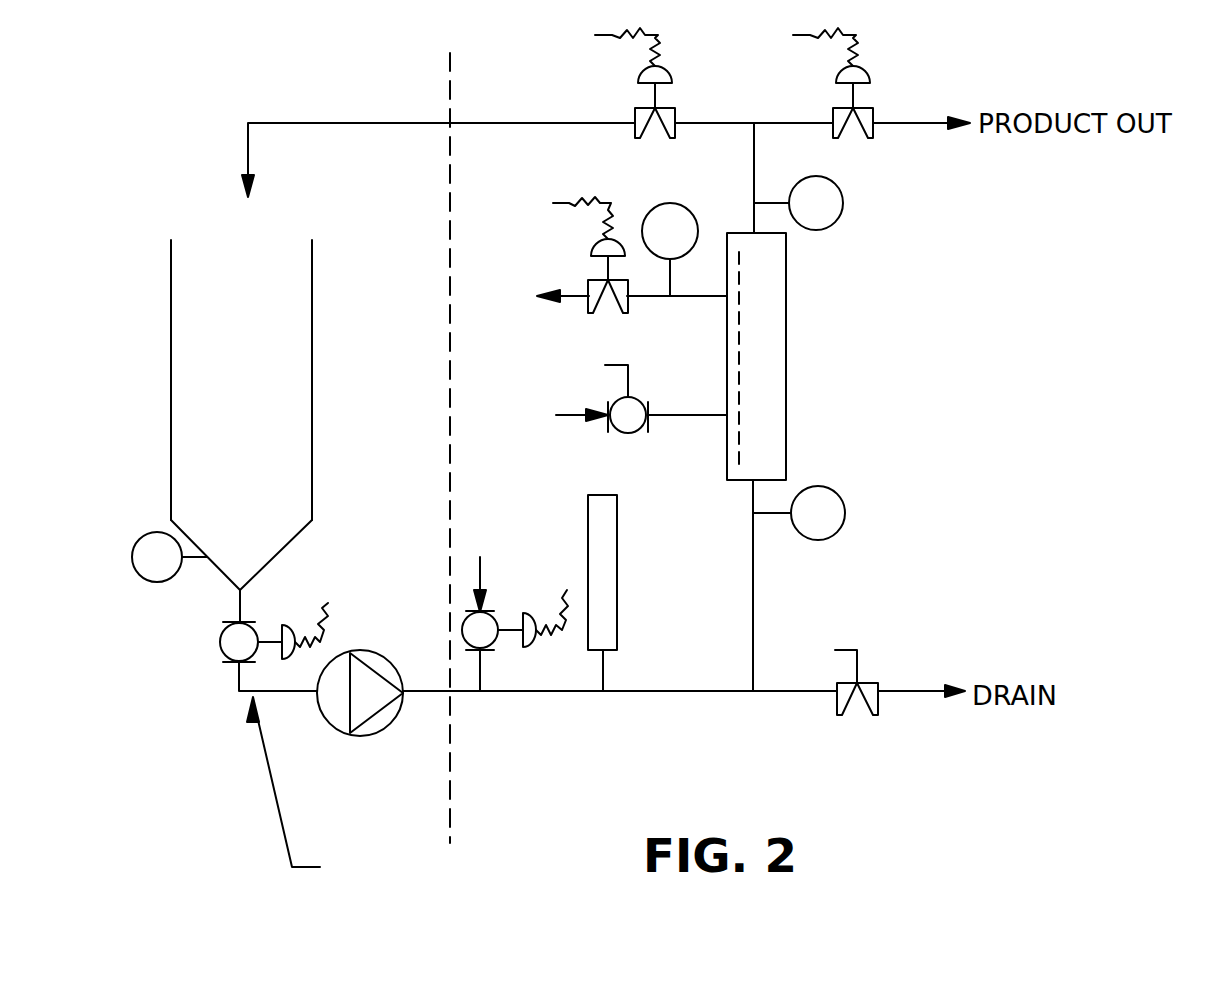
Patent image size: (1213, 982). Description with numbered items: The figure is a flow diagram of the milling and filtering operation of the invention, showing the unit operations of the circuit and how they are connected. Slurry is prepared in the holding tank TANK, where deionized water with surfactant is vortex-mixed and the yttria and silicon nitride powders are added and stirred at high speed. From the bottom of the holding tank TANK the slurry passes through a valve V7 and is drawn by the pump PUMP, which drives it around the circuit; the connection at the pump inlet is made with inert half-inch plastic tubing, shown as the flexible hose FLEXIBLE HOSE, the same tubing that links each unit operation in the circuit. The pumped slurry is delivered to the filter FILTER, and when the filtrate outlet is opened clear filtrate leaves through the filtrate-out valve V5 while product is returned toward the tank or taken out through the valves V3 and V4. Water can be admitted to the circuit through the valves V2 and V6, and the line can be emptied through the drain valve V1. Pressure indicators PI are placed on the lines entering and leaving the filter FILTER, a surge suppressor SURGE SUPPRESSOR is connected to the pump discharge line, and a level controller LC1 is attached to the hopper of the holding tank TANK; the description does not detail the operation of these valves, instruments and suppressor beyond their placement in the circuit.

The drain valve V1 is at (856, 699).
The water inlet valve (pump suction) V2 is at (515, 594).
The product out valve V3 is at (635, 99).
The product out valve V4 is at (833, 99).
The filtrate out valve V5 is at (591, 271).
The water inlet valve (filter) V6 is at (596, 418).
The tank outlet valve V7 is at (252, 632).
The level controller LC1 is at (169, 557).
The pressure indicator PI is at (743, 358).
The holding tank TANK is at (241, 431).
The pump PUMP is at (360, 712).
The filter FILTER is at (762, 390).
The surge suppressor SURGE SUPPRESSOR is at (617, 629).
The plastic tubing FLEXIBLE HOSE is at (405, 790).